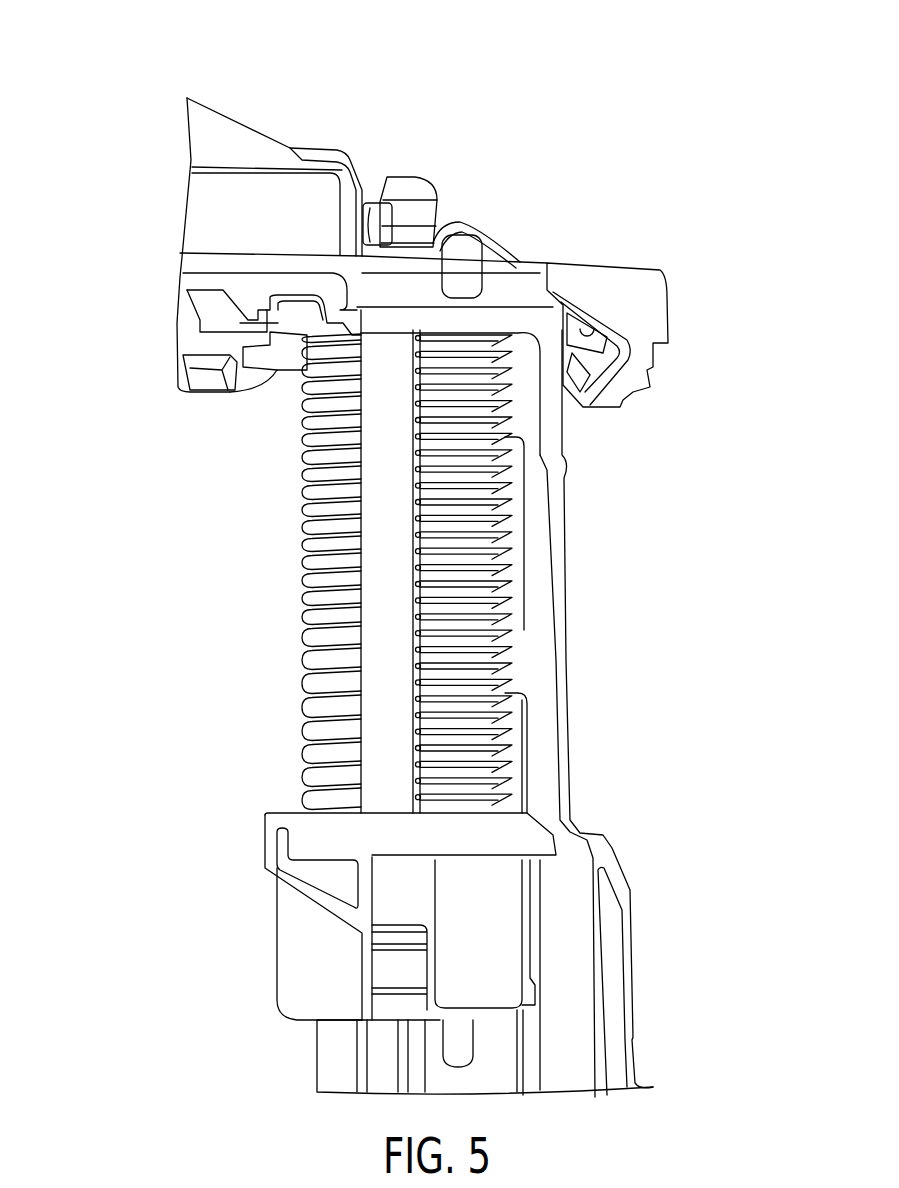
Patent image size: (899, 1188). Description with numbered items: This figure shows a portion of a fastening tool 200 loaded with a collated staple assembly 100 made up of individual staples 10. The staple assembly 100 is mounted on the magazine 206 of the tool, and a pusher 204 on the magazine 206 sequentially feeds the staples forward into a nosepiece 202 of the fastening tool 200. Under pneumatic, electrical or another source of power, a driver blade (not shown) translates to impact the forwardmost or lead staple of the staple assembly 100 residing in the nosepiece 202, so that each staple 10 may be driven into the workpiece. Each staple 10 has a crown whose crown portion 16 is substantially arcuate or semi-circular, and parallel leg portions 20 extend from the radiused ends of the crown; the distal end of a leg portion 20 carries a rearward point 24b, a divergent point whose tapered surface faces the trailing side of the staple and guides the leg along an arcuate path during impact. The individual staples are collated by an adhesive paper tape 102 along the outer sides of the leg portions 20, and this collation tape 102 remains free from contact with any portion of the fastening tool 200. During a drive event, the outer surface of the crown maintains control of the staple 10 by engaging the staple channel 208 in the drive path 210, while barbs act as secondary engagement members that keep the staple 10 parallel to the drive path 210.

The fastening tool 200 is at (98, 86).
The drive path 210 is at (520, 283).
The nosepiece 202 is at (652, 306).
The staple channel 208 is at (282, 390).
The collated staple assembly 100 is at (210, 738).
The staple 10 is at (298, 692).
The crown portion 16 is at (300, 467).
The paper tape 102 is at (383, 580).
The rearward point 24b is at (517, 518).
The leg portions 20 is at (510, 760).
The magazine 206 is at (500, 553).
The pusher 204 is at (278, 943).